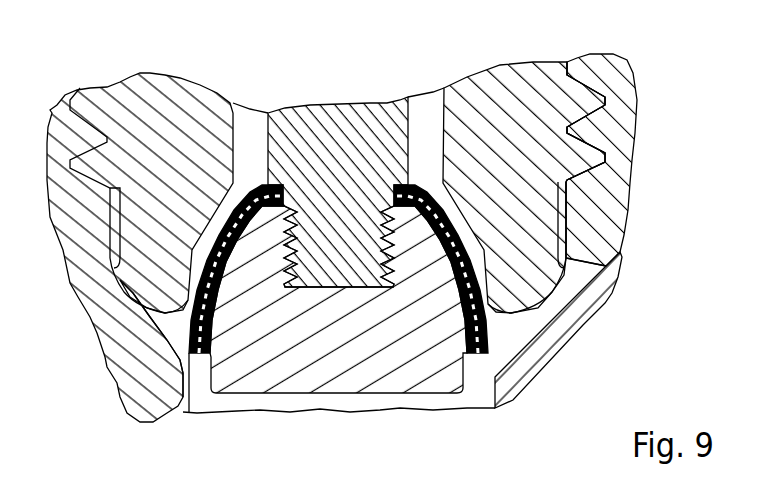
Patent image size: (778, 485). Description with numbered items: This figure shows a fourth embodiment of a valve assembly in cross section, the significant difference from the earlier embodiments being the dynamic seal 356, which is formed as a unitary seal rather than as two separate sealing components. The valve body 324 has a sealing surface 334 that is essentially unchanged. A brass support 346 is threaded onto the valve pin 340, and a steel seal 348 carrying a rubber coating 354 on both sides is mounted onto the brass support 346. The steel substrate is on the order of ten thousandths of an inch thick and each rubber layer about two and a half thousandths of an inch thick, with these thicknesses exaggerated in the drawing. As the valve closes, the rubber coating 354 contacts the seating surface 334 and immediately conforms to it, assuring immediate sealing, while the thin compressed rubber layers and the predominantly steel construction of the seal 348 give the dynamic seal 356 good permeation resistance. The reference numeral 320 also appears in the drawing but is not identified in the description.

The bone/mounting surface 320 is at (237, 410).
The valve body 324 is at (193, 80).
The sealing surface 334 is at (121, 285).
The valve pin 340 is at (345, 100).
The brass support 346 is at (415, 395).
The steel seal 348 is at (468, 353).
The rubber coating 354 is at (488, 337).
The dynamic seal 356 is at (490, 197).